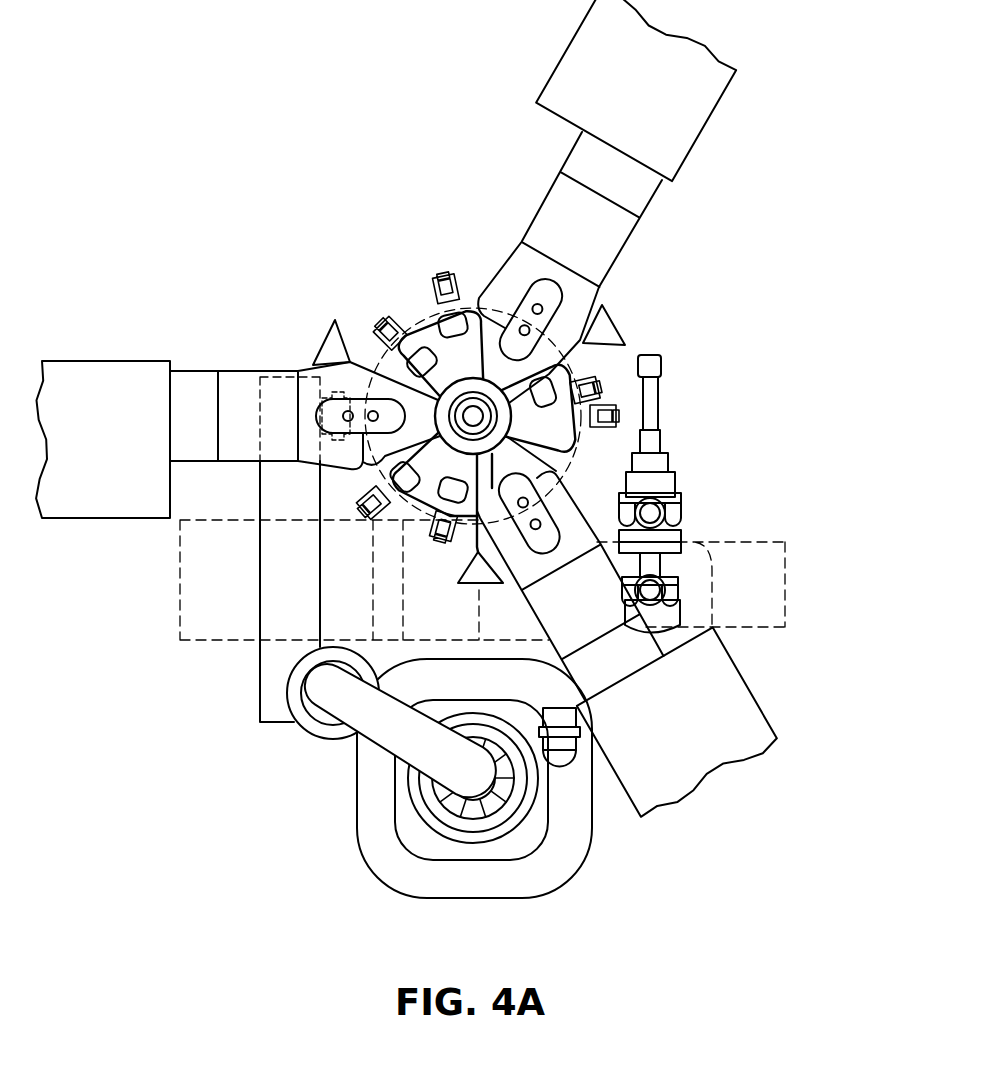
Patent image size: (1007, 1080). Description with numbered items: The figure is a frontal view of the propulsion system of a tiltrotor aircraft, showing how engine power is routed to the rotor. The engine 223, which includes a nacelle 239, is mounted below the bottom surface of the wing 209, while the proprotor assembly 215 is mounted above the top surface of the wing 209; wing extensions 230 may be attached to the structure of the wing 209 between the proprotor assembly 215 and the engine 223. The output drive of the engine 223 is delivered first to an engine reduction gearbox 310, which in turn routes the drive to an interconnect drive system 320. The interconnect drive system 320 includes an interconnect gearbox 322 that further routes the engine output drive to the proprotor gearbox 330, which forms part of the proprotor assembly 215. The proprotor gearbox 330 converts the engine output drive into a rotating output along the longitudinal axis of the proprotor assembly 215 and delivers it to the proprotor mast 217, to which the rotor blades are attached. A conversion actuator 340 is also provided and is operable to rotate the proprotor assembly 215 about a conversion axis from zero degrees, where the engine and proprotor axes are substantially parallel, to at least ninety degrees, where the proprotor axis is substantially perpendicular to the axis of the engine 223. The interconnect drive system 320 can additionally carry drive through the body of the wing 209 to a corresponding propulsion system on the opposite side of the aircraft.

The proprotor assembly 215 is at (454, 238).
The proprotor gearbox 330 is at (438, 322).
The interconnect gearbox 322 is at (270, 375).
The proprotor mast 217 is at (622, 327).
The conversion actuator 340 is at (678, 490).
The wing extension 230 is at (775, 542).
The wing 209 is at (182, 642).
The interconnect drive system 320 is at (270, 724).
The engine reduction gearbox 310 is at (394, 749).
The nacelle 239 is at (447, 898).
The engine 223 is at (500, 860).